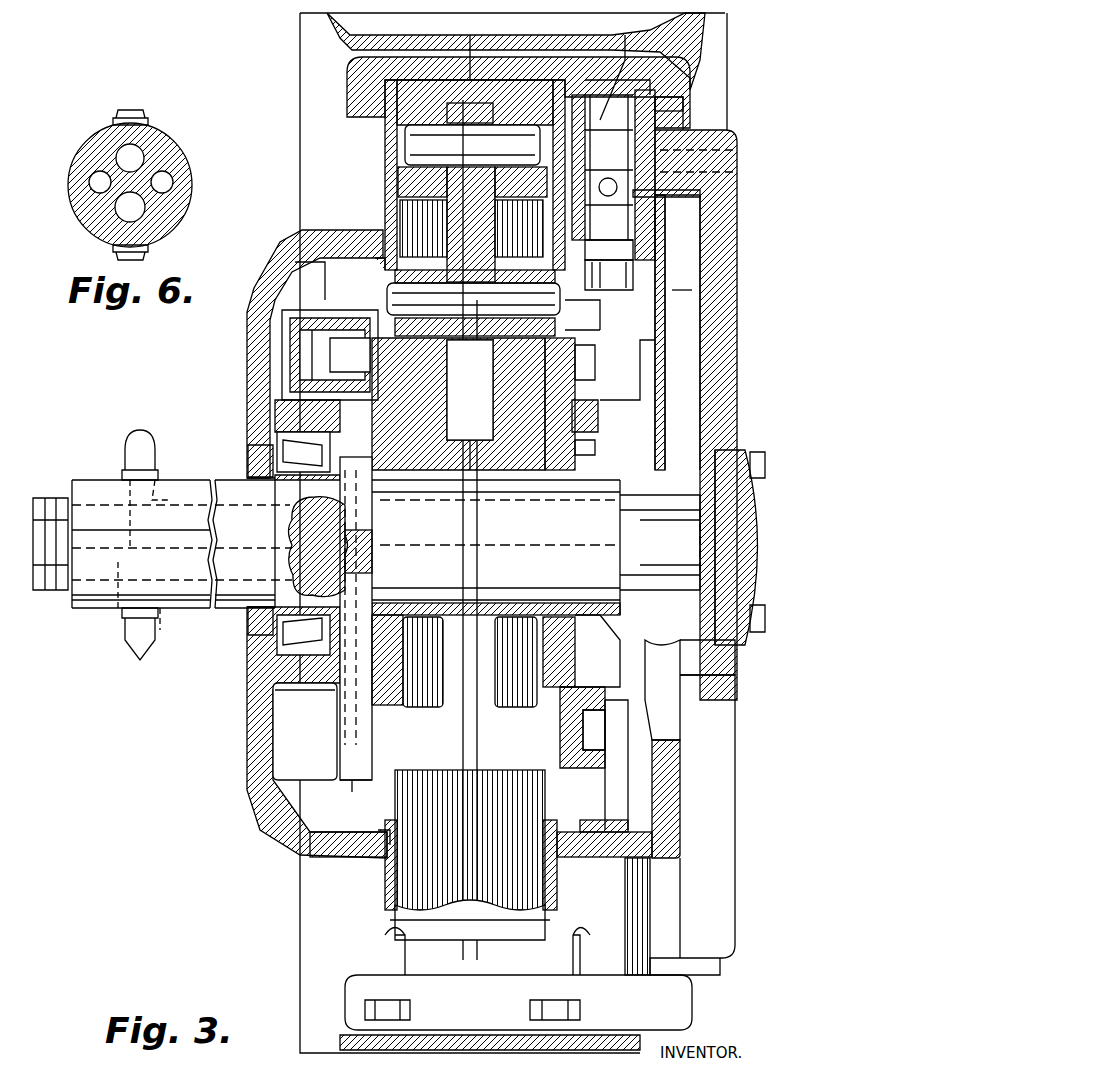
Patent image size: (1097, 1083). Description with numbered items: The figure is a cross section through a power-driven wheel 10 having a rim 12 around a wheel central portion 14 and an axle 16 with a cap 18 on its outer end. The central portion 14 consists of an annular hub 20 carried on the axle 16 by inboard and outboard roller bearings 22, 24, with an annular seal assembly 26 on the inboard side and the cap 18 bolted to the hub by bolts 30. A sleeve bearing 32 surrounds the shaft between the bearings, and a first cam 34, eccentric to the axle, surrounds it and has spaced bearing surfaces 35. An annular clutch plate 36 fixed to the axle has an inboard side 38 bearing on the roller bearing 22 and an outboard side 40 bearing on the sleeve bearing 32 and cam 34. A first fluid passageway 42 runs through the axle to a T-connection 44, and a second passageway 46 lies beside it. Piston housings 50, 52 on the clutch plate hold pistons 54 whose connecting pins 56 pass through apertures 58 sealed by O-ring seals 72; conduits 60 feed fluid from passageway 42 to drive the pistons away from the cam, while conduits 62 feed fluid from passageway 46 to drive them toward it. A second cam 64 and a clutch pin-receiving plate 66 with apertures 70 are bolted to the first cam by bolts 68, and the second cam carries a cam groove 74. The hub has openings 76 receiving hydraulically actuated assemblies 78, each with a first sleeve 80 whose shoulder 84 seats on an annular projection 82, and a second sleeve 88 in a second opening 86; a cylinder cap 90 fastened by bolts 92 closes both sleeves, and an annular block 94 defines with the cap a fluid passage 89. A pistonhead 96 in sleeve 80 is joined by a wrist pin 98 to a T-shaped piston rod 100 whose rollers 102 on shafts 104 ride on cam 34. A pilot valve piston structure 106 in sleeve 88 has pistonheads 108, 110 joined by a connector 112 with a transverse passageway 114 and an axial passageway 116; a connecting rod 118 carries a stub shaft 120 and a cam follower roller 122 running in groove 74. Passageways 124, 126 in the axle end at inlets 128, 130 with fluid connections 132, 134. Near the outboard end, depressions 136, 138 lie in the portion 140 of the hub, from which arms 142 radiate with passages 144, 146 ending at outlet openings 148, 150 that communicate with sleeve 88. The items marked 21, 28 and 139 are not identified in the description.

In FIG. 3, the power-driven wheel 10 is at (748, 144).
In FIG. 3, the rim 12 is at (690, 52).
In FIG. 3, the wheel central portion 14 is at (685, 750).
In FIG. 6, the axle 16 is at (170, 152).
In FIG. 3, the axle 16 is at (95, 608).
In FIG. 3, the cap 18 is at (755, 530).
In FIG. 3, the annular hub 20 is at (250, 762).
In FIG. 3, the block 21 is at (561, 404).
In FIG. 3, the inboard roller bearing 22 is at (258, 650).
In FIG. 3, the outboard roller bearing 24 is at (655, 640).
In FIG. 3, the annular seal assembly 26 is at (250, 630).
In FIG. 3, the end plate 28 is at (740, 655).
In FIG. 3, the bolts 30 is at (758, 450).
In FIG. 3, the sleeve bearing 32 is at (490, 487).
In FIG. 3, the first cam 34 is at (490, 590).
In FIG. 3, the spaced bearing surfaces 35 is at (458, 404).
In FIG. 3, the annular clutch plate 36 is at (355, 793).
In FIG. 3, the inboard side 38 is at (330, 640).
In FIG. 3, the outboard side 40 is at (356, 618).
In FIG. 6, the first fluid passageway 42 is at (98, 182).
In FIG. 3, the first fluid passageway 42 is at (365, 530).
In FIG. 3, the first fluid T-connection 44 is at (50, 590).
In FIG. 6, the second passageway 46 is at (166, 182).
In FIG. 3, the piston housing 50 is at (282, 325).
In FIG. 3, the piston housing 52 is at (285, 705).
In FIG. 3, the reciprocable pistons 54 is at (300, 355).
In FIG. 3, the connecting pin 56 is at (330, 365).
In FIG. 3, the aperture 58 is at (387, 300).
In FIG. 3, the first fluid-carrying conduits 60 is at (500, 515).
In FIG. 3, the second fluid-carrying conduits 62 is at (306, 518).
In FIG. 3, the second cam 64 is at (603, 414).
In FIG. 3, the clutch pin-receiving plate 66 is at (466, 424).
In FIG. 3, the bolts 68 is at (593, 438).
In FIG. 3, the apertures 70 is at (470, 390).
In FIG. 3, the O-ring seal 72 is at (277, 440).
In FIG. 3, the cam groove 74 is at (580, 748).
In FIG. 3, the openings 76 is at (470, 548).
In FIG. 3, the hydraulically actuated assemblies 78 is at (352, 120).
In FIG. 3, the first cylindrical sleeve 80 is at (385, 180).
In FIG. 3, the annular projection 82 is at (385, 830).
In FIG. 3, the annular shoulder 84 is at (501, 524).
In FIG. 3, the second openings 86 is at (700, 296).
In FIG. 3, the second cylinder sleeve 88 is at (683, 105).
In FIG. 3, the fluid passage 89 is at (585, 90).
In FIG. 3, the cylinder cap 90 is at (347, 66).
In FIG. 3, the bolts 92 is at (385, 938).
In FIG. 3, the annular block 94 is at (625, 45).
In FIG. 3, the pistonhead 96 is at (540, 787).
In FIG. 3, the wrist pin 98 is at (405, 145).
In FIG. 3, the T-shaped piston rod 100 is at (495, 215).
In FIG. 3, the rollers 102 is at (515, 712).
In FIG. 3, the spaced shafts 104 is at (586, 672).
In FIG. 3, the pilot valve piston structure 106 is at (688, 80).
In FIG. 3, the pistonhead 108 is at (617, 90).
In FIG. 3, the pistonhead 110 is at (609, 275).
In FIG. 3, the connector 112 is at (697, 163).
In FIG. 3, the transverse passageway 114 is at (613, 175).
In FIG. 3, the axial passageway 116 is at (609, 237).
In FIG. 3, the connecting rod 118 is at (605, 798).
In FIG. 3, the stub shaft 120 is at (672, 355).
In FIG. 3, the cam follower roller 122 is at (605, 554).
In FIG. 6, the fluid passageway 124 is at (140, 152).
In FIG. 3, the fluid passageway 124 is at (125, 485).
In FIG. 6, the fluid passageway 126 is at (136, 213).
In FIG. 3, the fluid passageway 126 is at (118, 610).
In FIG. 3, the inlet 128 is at (160, 465).
In FIG. 3, the inlet 130 is at (175, 620).
In FIG. 6, the fluid connection 132 is at (113, 110).
In FIG. 3, the fluid connection 132 is at (138, 430).
In FIG. 6, the fluid connection 134 is at (113, 250).
In FIG. 3, the fluid connection 134 is at (145, 660).
In FIG. 3, the annular depression 136 is at (707, 657).
In FIG. 3, the annular depression 138 is at (758, 578).
In FIG. 3, the bracket 139 is at (735, 790).
In FIG. 3, the portion 140 is at (720, 130).
In FIG. 3, the arms 142 is at (738, 245).
In FIG. 3, the fluid passage 144 is at (700, 270).
In FIG. 3, the fluid passage 146 is at (715, 225).
In FIG. 3, the outlet opening 148 is at (667, 201).
In FIG. 3, the outlet opening 150 is at (620, 185).